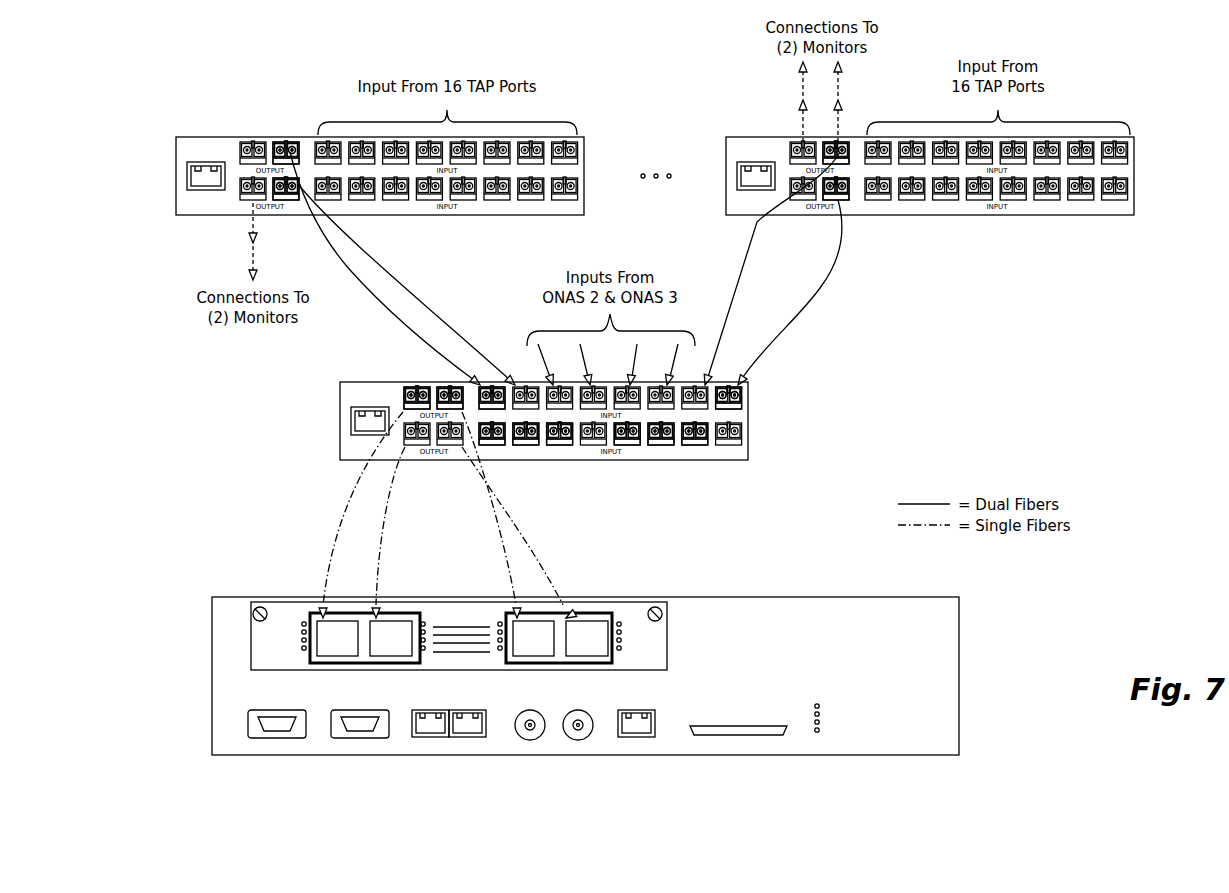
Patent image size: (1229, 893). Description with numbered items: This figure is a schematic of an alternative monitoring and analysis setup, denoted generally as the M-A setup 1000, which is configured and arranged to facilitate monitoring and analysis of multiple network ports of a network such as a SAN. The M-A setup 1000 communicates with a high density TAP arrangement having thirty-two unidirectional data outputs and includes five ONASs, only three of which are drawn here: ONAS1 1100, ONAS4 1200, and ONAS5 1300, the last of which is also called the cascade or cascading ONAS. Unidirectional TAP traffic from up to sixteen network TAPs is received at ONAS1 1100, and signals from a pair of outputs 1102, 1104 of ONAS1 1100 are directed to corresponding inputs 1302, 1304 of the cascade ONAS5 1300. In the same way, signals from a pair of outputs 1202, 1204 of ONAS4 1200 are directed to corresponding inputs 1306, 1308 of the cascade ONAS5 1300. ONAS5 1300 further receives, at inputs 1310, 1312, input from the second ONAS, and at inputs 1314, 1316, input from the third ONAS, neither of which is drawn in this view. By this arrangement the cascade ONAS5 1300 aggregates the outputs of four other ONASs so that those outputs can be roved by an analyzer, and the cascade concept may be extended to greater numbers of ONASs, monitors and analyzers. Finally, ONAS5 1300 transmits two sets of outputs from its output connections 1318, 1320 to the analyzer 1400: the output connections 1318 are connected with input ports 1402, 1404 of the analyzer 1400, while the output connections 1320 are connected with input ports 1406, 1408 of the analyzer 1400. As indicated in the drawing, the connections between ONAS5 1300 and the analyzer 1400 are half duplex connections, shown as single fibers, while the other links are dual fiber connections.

The M-A setup 1000 is at (603, 62).
The ONAS1 1100 is at (176, 176).
The output of ONAS1 1102 is at (289, 143).
The output of ONAS1 1104 is at (289, 201).
The ONAS4 1200 is at (1138, 176).
The output of ONAS4 1202 is at (844, 142).
The output of ONAS4 1204 is at (843, 202).
The cascade ONAS5 1300 is at (750, 429).
The input of ONAS5 1302 is at (512, 411).
The input of ONAS5 1304 is at (477, 388).
The input of ONAS5 1306 is at (705, 411).
The input of ONAS5 1308 is at (745, 401).
The input of ONAS5 1310 is at (547, 411).
The input of ONAS5 1312 is at (578, 411).
The input of ONAS5 1314 is at (643, 411).
The input of ONAS5 1316 is at (675, 411).
The output connections of ONAS5 1318 is at (416, 390).
The output connections of ONAS5 1320 is at (447, 388).
The analyzer 1400 is at (960, 678).
The input port of analyzer 1402 is at (330, 658).
The input port of analyzer 1404 is at (405, 658).
The input port of analyzer 1406 is at (522, 658).
The input port of analyzer 1408 is at (587, 658).